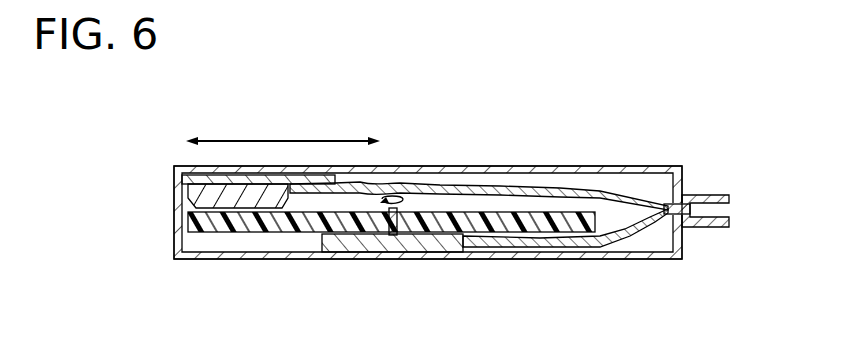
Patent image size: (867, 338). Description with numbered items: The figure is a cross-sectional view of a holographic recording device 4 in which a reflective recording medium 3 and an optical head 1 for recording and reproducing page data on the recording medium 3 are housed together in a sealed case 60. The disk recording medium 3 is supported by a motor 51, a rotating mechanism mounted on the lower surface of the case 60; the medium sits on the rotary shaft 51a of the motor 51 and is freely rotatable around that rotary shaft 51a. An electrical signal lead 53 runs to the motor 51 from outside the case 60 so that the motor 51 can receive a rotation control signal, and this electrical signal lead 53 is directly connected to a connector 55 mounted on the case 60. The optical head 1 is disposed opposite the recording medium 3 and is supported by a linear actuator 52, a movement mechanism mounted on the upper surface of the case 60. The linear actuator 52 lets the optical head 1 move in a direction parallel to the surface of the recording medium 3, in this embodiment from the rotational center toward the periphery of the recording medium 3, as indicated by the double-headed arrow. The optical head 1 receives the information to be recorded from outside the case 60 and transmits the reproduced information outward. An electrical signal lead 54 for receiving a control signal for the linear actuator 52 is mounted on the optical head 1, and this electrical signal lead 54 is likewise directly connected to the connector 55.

The optical head 1 is at (200, 198).
The recording medium 3 is at (265, 227).
The holographic recording device 4 is at (445, 160).
The motor 51 is at (428, 247).
The rotary shaft 51a is at (361, 237).
The linear actuator 52 is at (196, 179).
The electrical signal lead 53 is at (551, 243).
The electrical signal lead 54 is at (579, 190).
The connector 55 is at (705, 195).
The case 60 is at (509, 166).